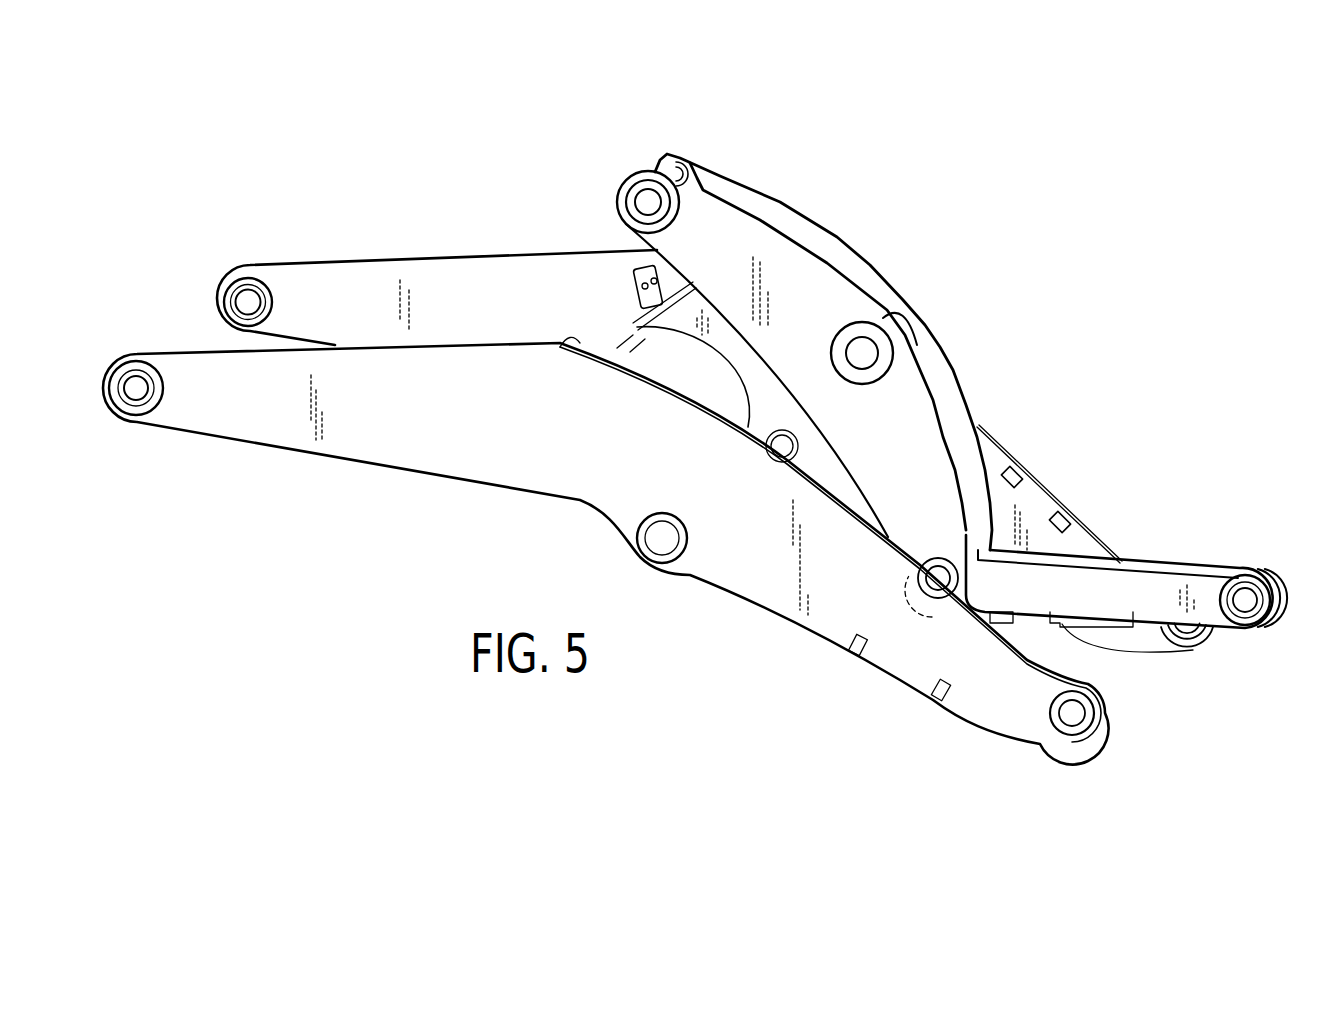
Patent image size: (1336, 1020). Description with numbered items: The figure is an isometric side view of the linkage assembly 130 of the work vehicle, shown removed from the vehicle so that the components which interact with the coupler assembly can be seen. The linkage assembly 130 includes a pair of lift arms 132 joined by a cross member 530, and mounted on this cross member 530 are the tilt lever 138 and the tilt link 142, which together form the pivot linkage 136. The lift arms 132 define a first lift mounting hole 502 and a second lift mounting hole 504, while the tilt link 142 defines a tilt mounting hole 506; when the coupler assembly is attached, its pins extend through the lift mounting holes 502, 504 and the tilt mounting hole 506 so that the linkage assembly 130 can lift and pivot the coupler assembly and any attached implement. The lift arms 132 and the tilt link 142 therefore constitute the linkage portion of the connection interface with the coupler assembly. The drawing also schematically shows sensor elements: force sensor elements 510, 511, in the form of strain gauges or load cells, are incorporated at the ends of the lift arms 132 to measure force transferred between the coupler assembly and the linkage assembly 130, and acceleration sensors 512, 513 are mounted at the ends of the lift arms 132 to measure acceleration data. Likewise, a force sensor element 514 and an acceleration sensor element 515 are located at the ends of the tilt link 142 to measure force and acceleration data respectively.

The linkage assembly 130 is at (412, 128).
The lift arms 132 is at (236, 434).
The pivot linkage 136 is at (763, 190).
The tilt lever 138 is at (702, 224).
The tilt link 142 is at (1170, 548).
The first lift mounting hole 502 is at (1183, 637).
The second lift mounting hole 504 is at (1070, 727).
The tilt mounting hole 506 is at (1268, 572).
The force sensor element 510 is at (1065, 514).
The force sensor element 511 is at (937, 697).
The acceleration sensor 512 is at (1012, 467).
The acceleration sensor 513 is at (856, 655).
The force sensor element 514 is at (1058, 618).
The acceleration sensor element 515 is at (1000, 625).
The cross member 530 is at (633, 323).